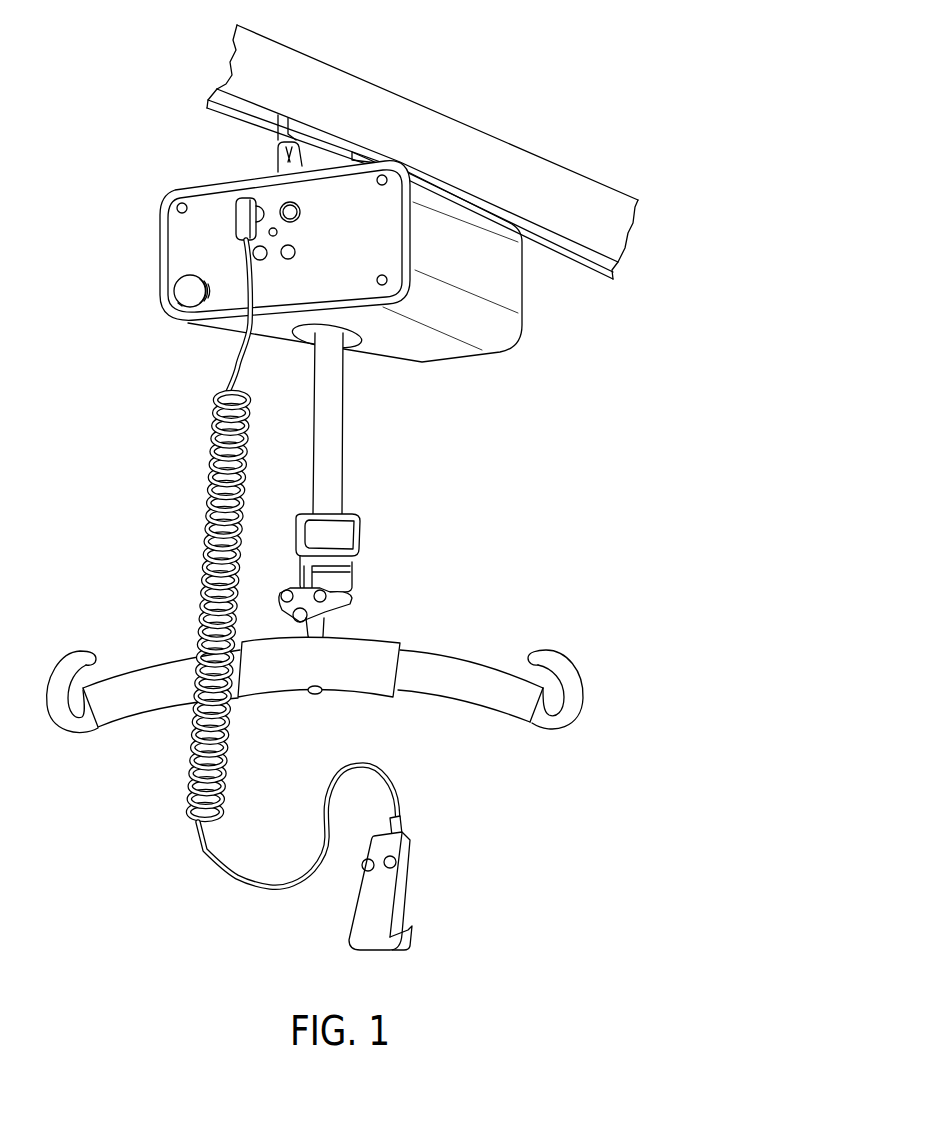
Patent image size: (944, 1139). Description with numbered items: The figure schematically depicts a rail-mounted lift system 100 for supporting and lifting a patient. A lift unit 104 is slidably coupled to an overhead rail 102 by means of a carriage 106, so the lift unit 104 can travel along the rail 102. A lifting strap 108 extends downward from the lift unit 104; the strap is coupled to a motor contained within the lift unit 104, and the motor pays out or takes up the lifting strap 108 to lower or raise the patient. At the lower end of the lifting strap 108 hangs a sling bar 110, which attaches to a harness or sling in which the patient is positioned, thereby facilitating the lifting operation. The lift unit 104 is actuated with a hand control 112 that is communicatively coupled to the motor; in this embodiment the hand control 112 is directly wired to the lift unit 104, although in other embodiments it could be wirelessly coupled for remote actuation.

The rail-mounted lift system 100 is at (347, 480).
The rail 102 is at (446, 114).
The lift unit 104 is at (525, 317).
The carriage 106 is at (278, 167).
The lifting strap 108 is at (342, 448).
The sling bar 110 is at (443, 657).
The hand control 112 is at (410, 903).